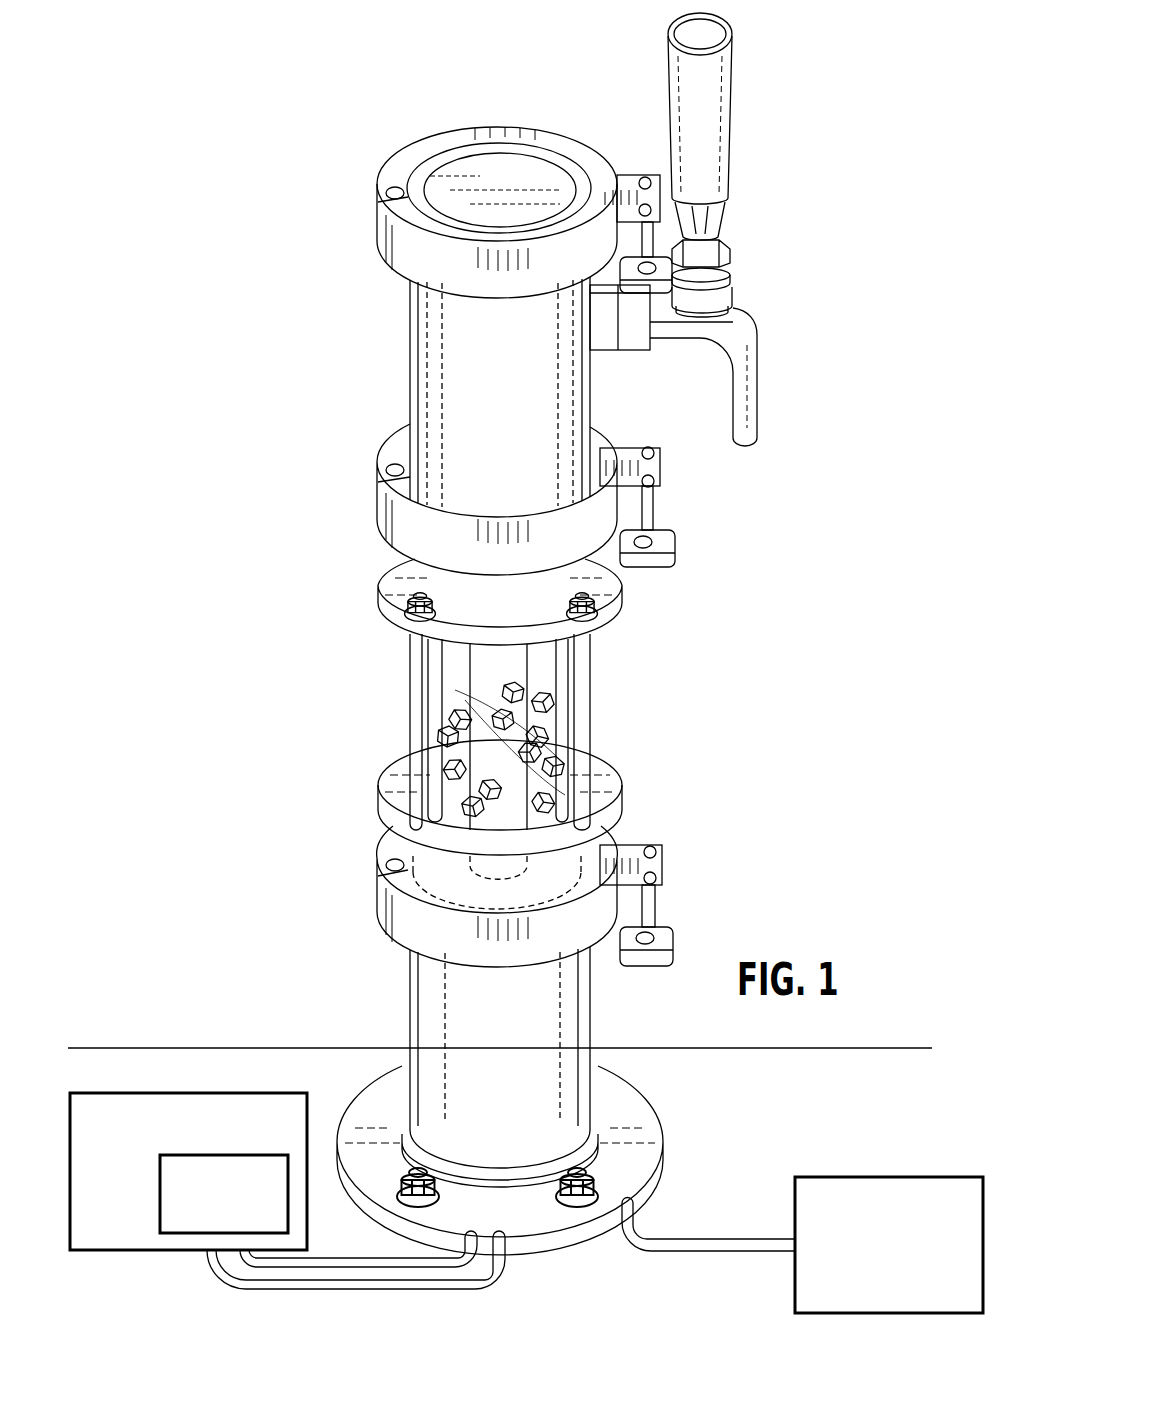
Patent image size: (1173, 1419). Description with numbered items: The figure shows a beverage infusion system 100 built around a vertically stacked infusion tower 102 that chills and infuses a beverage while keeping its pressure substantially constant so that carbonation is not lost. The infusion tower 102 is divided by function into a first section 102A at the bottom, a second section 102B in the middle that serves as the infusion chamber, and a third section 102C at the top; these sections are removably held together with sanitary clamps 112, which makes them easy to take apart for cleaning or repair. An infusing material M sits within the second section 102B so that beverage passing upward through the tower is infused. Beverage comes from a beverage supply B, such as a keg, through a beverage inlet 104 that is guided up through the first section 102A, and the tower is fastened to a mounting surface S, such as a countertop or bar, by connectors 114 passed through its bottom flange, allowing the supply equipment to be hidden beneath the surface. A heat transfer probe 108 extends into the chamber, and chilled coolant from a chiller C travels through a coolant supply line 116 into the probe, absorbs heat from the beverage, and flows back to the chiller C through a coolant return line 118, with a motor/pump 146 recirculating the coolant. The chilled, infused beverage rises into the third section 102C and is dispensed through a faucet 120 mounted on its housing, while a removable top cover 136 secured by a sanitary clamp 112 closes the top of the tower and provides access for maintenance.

The beverage infusion system 100 is at (226, 68).
The infusion tower 102 is at (366, 384).
The first section 102A is at (404, 994).
The second section 102B is at (400, 671).
The third section 102C is at (400, 314).
The beverage inlet 104 is at (752, 1245).
The heat transfer probe 108 is at (490, 680).
The sanitary clamps 112 is at (395, 170).
The connectors 114 is at (578, 1200).
The coolant supply line 116 is at (405, 1270).
The coolant return line 118 is at (313, 1280).
The faucet 120 is at (750, 320).
The top cover 136 is at (490, 168).
The motor/pump 146 is at (178, 1235).
The infusing material M is at (557, 700).
The chiller C is at (123, 1092).
The beverage supply B is at (893, 1177).
The mounting surface S is at (777, 1117).